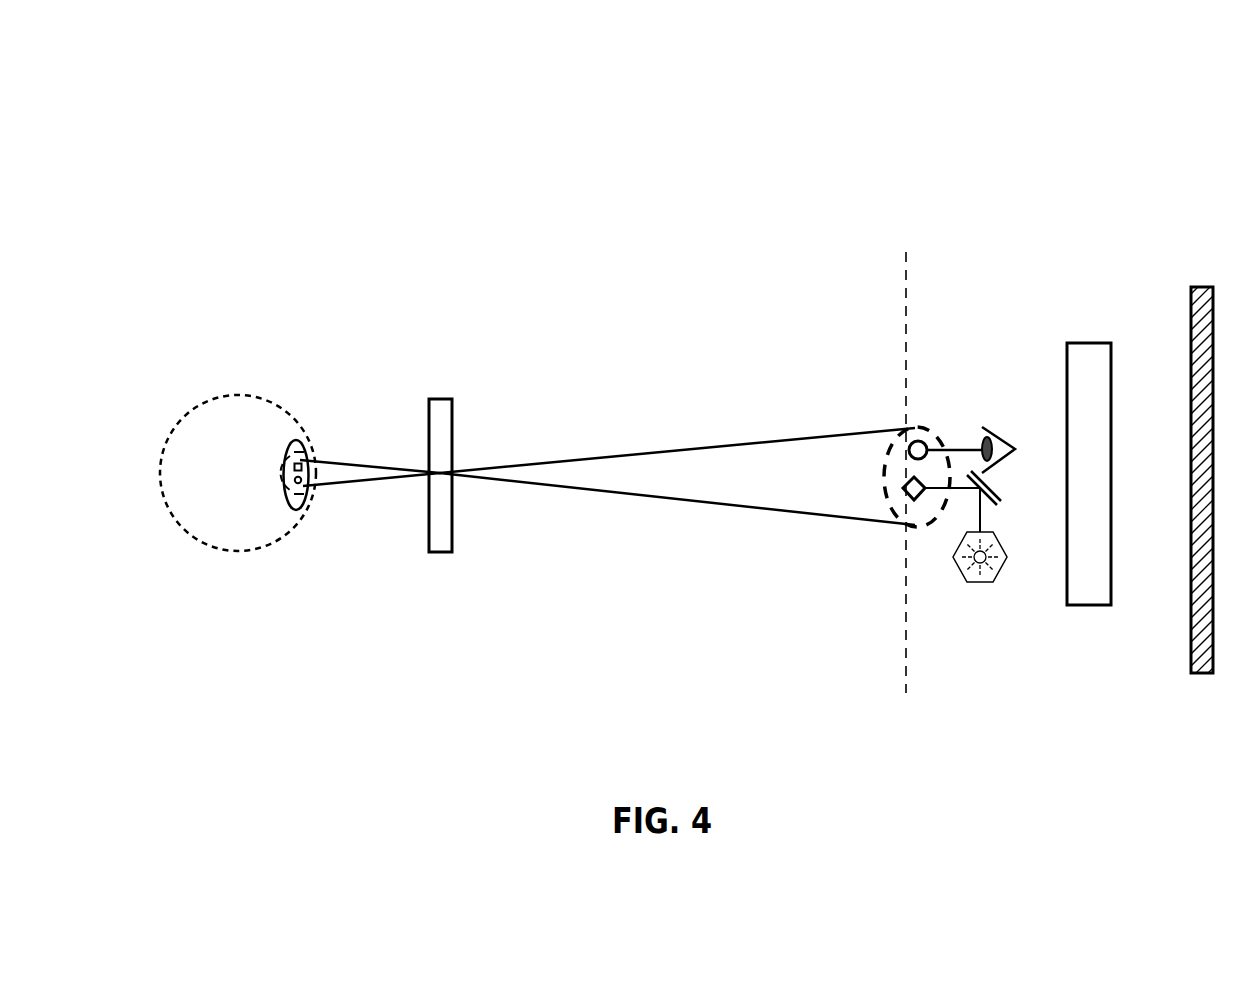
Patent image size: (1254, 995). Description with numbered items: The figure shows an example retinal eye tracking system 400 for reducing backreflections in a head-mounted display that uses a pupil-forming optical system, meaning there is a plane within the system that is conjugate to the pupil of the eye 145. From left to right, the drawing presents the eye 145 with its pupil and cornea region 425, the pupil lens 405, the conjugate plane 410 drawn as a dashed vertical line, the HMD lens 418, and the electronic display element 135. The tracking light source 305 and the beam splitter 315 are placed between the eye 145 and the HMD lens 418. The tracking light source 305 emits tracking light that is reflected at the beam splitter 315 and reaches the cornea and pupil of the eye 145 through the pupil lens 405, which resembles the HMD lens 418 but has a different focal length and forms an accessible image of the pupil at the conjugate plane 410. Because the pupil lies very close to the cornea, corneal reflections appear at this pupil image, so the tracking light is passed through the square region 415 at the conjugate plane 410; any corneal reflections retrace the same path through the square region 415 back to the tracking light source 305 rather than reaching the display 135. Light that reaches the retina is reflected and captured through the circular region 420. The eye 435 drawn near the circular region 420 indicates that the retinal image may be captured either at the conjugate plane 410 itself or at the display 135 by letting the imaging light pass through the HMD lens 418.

The retinal eye tracking system 400 is at (202, 146).
The eye 145 is at (166, 428).
The eye lens / pupil 425 is at (316, 434).
The pupil lens 405 is at (460, 396).
The conjugate plane 410 is at (894, 267).
The square region 415 is at (903, 528).
The circular region 420 is at (935, 434).
The eye 435 is at (1014, 434).
The beam splitter 315 is at (1011, 497).
The tracking light source 305 is at (964, 588).
The HMD lens 418 is at (1059, 611).
The electronic display element 135 is at (1186, 285).